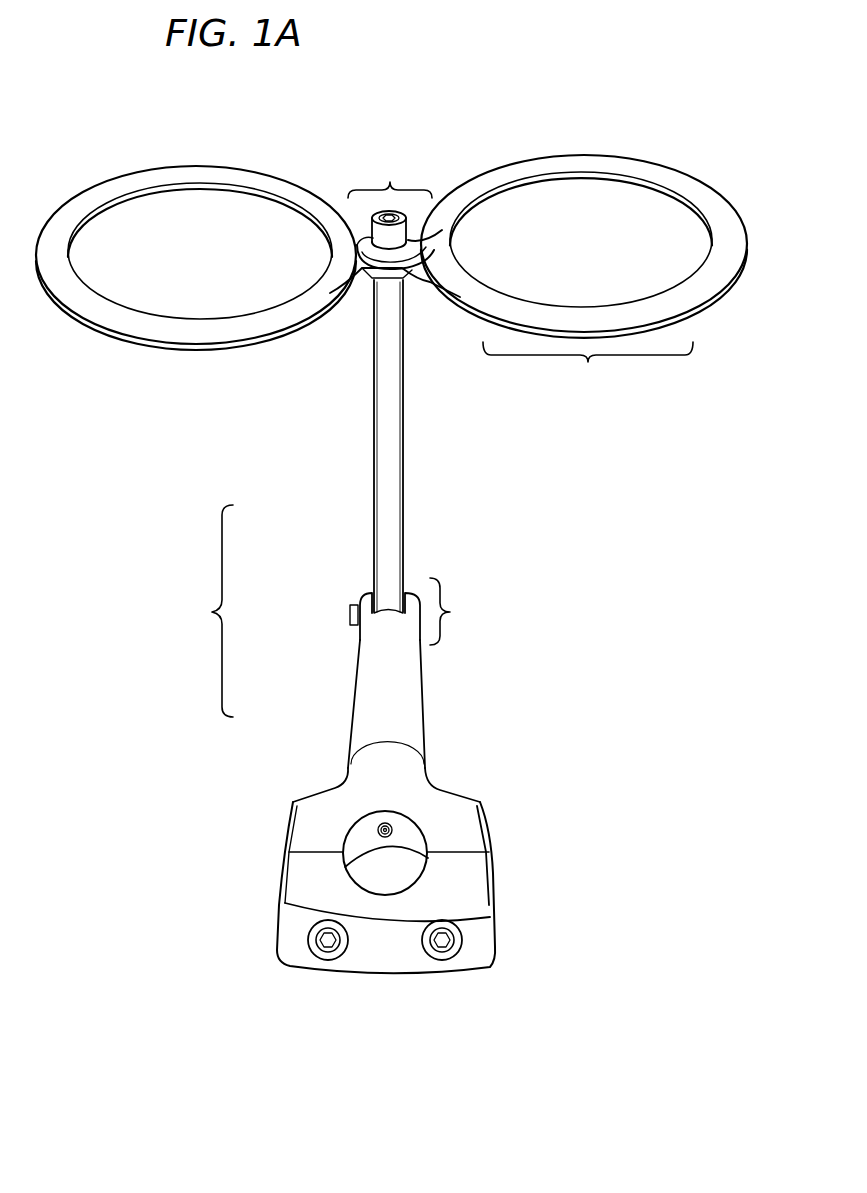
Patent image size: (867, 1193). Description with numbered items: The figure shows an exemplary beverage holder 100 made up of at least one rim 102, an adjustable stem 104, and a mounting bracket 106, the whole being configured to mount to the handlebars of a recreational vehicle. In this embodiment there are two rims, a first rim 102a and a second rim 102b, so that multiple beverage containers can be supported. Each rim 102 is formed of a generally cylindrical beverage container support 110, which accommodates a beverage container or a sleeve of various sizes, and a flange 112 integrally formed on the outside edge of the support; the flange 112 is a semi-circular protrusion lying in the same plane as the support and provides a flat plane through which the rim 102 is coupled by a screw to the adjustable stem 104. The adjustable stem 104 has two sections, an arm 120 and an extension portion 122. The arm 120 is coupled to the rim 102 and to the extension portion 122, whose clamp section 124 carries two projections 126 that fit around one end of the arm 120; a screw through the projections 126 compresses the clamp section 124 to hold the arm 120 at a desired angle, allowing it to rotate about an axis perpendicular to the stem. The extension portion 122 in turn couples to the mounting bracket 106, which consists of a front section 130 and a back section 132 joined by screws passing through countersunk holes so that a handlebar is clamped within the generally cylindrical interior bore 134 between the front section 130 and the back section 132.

The beverage holder 100 is at (666, 82).
The rim 102 is at (140, 163).
The first rim 102a is at (67, 318).
The second rim 102b is at (717, 188).
The adjustable stem 104 is at (210, 612).
The mounting bracket 106 is at (270, 840).
The beverage container support 110 is at (588, 357).
The flange 112 is at (390, 178).
The arm 120 is at (407, 455).
The extension portion 122 is at (424, 703).
The clamp section 124 is at (455, 612).
The projections 126 is at (365, 594).
The front section 130 is at (460, 795).
The back section 132 is at (462, 888).
The interior bore 134 is at (326, 870).